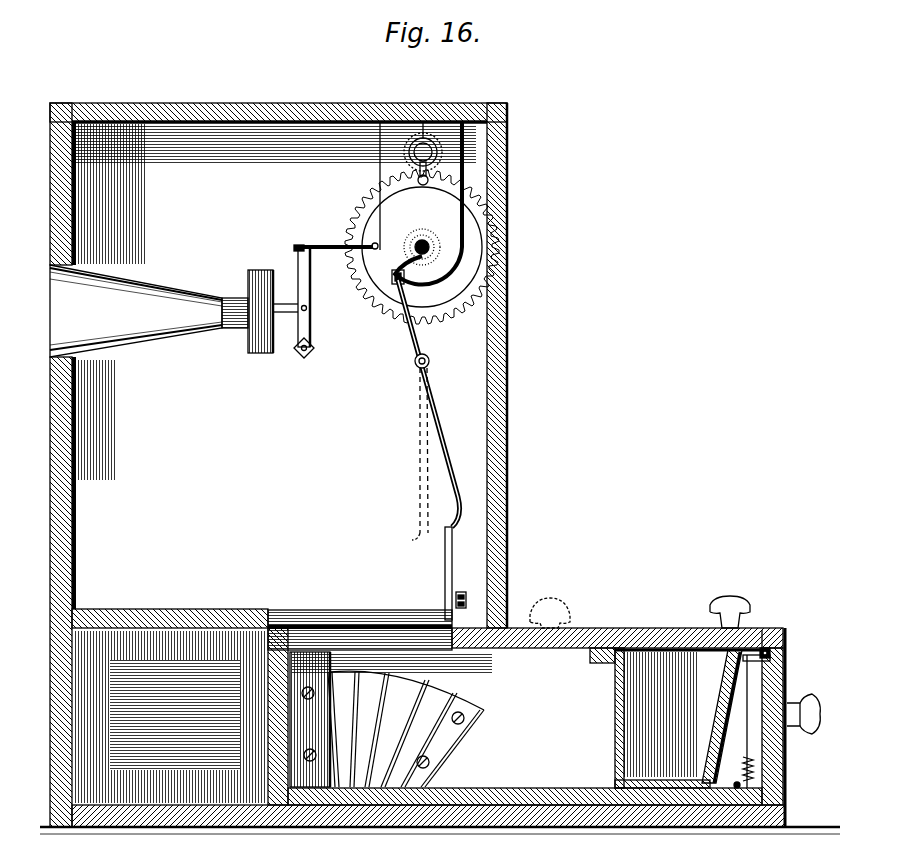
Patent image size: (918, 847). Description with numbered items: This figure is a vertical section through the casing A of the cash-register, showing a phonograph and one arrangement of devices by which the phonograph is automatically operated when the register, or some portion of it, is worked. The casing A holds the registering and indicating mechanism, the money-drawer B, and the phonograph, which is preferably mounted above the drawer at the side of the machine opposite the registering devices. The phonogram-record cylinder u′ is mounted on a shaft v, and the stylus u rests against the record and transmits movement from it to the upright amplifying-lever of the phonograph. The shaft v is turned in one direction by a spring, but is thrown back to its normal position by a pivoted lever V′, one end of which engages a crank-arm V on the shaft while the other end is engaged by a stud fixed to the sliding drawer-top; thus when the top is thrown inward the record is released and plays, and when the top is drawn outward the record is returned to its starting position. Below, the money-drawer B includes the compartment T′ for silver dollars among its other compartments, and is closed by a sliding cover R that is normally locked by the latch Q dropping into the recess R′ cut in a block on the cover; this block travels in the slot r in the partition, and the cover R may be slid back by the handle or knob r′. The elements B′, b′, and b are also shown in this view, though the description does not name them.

The casing A is at (280, 366).
The crank-arm V is at (548, 272).
The disk v′ is at (262, 276).
The stylus u is at (341, 246).
The phonogram-record cylinder u′ is at (463, 213).
The shaft v is at (432, 247).
The pivoted lever V′ is at (436, 390).
The latch Q is at (463, 592).
The recess R′ is at (469, 609).
The slot r is at (372, 616).
The sliding cover R is at (636, 640).
The handle or knob r′ is at (731, 598).
The money-drawer B is at (432, 719).
The compartment T′ is at (662, 718).
The slanted plate B′ is at (714, 742).
The pin b′ is at (778, 653).
The knob b is at (803, 729).